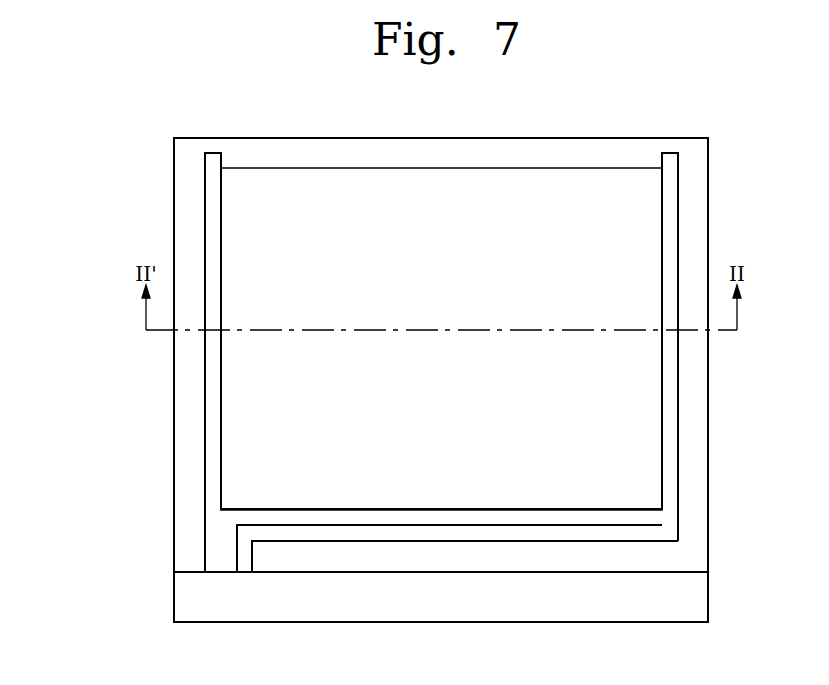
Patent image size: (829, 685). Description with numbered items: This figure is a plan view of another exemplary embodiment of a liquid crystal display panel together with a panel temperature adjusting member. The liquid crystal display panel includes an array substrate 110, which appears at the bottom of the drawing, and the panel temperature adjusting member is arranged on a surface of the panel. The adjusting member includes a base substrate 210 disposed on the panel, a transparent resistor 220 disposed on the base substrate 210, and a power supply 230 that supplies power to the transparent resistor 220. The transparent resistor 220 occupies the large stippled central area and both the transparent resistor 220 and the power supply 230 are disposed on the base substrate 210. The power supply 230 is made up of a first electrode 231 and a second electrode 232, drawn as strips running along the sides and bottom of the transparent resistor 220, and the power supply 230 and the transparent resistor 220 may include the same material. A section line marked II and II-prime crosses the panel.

The array substrate 110 is at (185, 601).
The base substrate 210 is at (185, 395).
The transparent resistor 220 is at (237, 462).
The power supply 230 is at (90, 503).
The first electrode 231 is at (212, 513).
The second electrode 232 is at (243, 562).